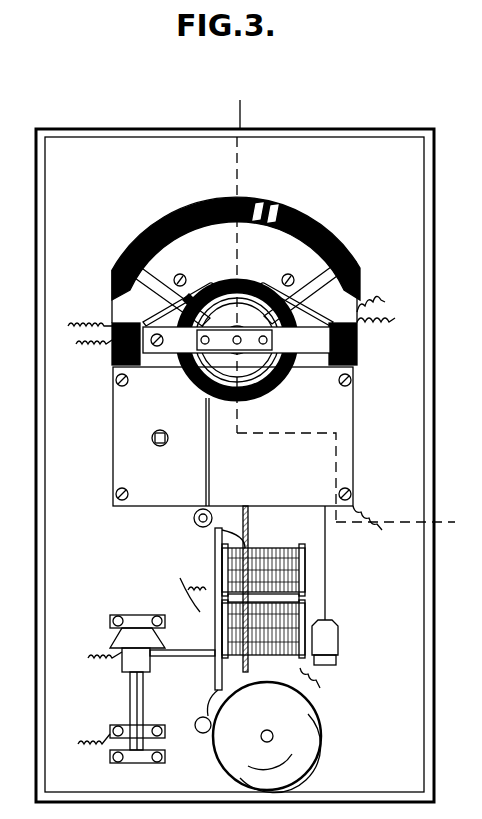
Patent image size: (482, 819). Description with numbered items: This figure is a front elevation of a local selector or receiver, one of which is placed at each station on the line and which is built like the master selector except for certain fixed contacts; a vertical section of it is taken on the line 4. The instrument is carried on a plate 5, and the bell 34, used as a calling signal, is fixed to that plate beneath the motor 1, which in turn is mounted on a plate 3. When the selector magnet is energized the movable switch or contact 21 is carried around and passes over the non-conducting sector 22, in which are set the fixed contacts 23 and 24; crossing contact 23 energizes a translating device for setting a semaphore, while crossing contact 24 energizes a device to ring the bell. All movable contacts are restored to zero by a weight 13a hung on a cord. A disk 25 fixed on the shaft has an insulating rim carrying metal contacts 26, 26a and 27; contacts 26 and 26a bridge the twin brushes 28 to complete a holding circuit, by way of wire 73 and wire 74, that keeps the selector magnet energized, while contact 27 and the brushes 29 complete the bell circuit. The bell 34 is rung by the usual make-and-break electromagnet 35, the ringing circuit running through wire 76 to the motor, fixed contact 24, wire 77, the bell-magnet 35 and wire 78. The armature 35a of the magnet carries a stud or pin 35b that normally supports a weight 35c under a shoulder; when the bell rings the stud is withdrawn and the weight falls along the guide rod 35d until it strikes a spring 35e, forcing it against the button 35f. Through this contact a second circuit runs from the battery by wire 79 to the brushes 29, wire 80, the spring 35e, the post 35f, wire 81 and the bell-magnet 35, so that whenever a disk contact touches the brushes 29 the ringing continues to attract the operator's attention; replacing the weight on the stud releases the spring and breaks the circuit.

The motor 1 is at (286, 477).
The mounting plate 3 is at (248, 522).
The section line 4 is at (352, 308).
The plate 5 is at (235, 465).
The weight 13a is at (195, 520).
The movable switch or contact 21 is at (140, 275).
The non-conducting sector 22 is at (320, 232).
The fixed contact 23 is at (258, 203).
The fixed contact 24 is at (275, 206).
The disk 25 is at (284, 378).
The metal contact 26 is at (186, 300).
The metal contact 26a is at (206, 288).
The metal contact 27 is at (180, 353).
The twin brushes 28 is at (335, 300).
The brushes 29 is at (165, 320).
The bell 34 is at (258, 737).
The make-and-break electromagnet 35 is at (290, 562).
The armature 35a is at (215, 580).
The stud or pin 35b is at (186, 656).
The weight 35c is at (128, 668).
The guide rod 35d is at (130, 698).
The spring 35e is at (143, 706).
The button 35f is at (142, 763).
The wire 73 is at (368, 337).
The wire 74 is at (382, 301).
The wire 76 is at (375, 529).
The wire 77 is at (320, 682).
The wire 78 is at (182, 589).
The wire 79 is at (93, 341).
The wire 80 is at (84, 502).
The wire 81 is at (81, 745).